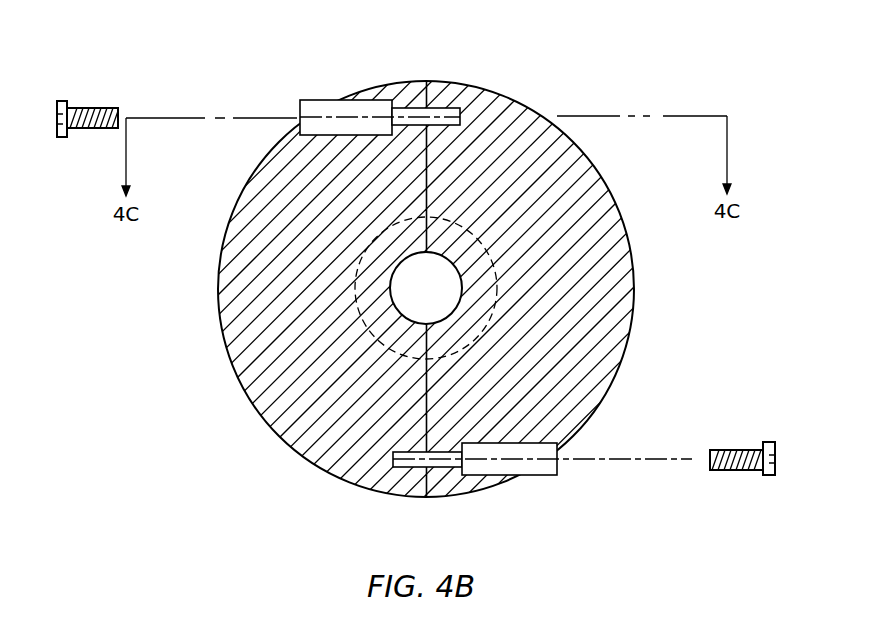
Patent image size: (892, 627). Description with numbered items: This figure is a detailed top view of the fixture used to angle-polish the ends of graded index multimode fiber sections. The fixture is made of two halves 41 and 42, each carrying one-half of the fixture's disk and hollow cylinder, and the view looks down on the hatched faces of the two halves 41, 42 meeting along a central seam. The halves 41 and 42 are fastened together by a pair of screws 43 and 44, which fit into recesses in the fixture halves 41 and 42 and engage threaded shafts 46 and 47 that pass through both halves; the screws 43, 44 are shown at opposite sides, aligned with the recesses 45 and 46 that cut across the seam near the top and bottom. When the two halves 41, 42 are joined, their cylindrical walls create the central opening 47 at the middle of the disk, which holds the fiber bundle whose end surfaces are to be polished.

The fixture half 41 is at (270, 308).
The fixture half 42 is at (560, 317).
The screw 43 is at (88, 108).
The screw 44 is at (745, 450).
The screw hole 45 is at (418, 108).
The threaded shaft 46 is at (406, 463).
The central opening 47 is at (463, 282).